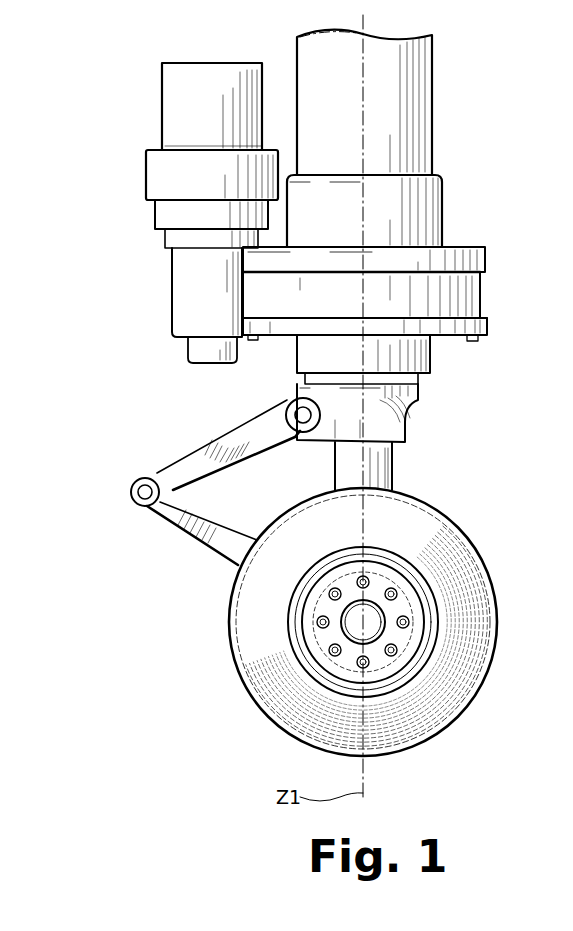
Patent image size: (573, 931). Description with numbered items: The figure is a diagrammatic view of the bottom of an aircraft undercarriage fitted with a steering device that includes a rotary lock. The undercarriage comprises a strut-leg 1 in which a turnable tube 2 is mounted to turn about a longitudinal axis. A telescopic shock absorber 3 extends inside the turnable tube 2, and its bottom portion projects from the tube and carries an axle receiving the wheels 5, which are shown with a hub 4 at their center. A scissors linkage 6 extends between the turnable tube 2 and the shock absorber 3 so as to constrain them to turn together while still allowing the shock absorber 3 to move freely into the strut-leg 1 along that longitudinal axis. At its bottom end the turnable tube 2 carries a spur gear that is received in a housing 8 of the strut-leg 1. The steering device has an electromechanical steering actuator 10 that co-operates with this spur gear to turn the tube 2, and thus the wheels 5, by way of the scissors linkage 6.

The strut-leg 1 is at (418, 108).
The turnable tube 2 is at (408, 412).
The telescopic shock absorber 3 is at (383, 470).
The wheel hub 4 is at (375, 614).
The wheels 5 is at (460, 562).
The scissors linkage 6 is at (192, 461).
The housing 8 is at (465, 295).
The electromechanical steering actuator 10 is at (138, 188).